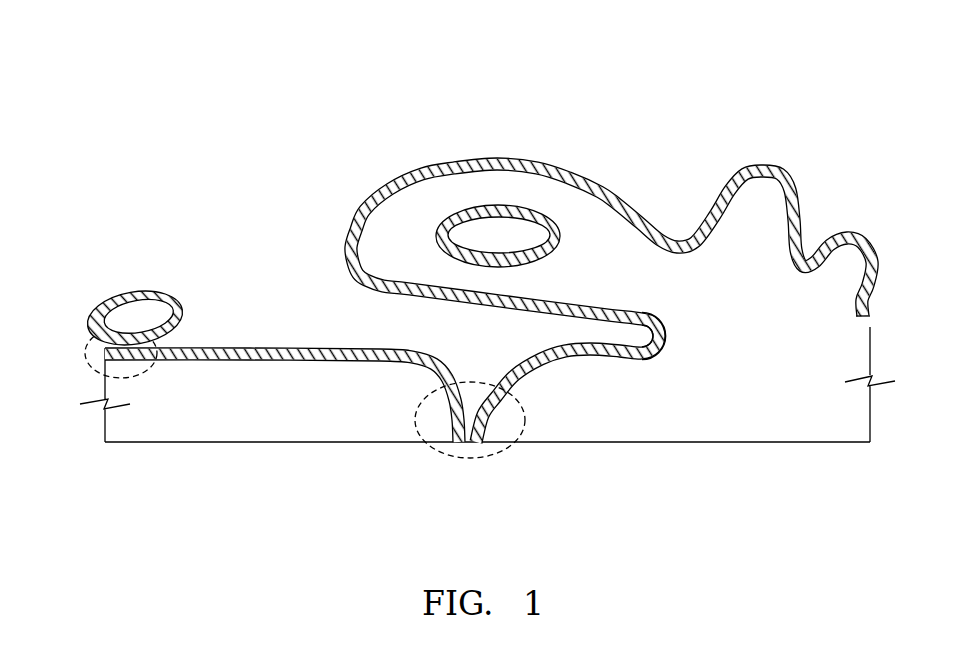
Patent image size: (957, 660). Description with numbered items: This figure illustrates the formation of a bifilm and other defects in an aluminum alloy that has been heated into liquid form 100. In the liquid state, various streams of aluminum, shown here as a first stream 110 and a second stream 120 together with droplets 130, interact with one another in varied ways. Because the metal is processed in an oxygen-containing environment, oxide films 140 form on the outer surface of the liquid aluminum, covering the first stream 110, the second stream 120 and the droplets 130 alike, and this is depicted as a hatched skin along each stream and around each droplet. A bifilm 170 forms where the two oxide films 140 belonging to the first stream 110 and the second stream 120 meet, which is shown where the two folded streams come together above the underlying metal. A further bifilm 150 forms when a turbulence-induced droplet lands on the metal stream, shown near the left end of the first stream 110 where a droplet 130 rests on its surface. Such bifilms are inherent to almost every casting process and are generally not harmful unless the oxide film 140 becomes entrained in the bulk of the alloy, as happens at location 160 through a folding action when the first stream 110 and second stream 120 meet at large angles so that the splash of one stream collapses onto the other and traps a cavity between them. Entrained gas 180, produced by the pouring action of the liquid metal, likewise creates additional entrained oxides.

The liquid form 100 is at (458, 290).
The first stream 110 is at (277, 415).
The second stream 120 is at (779, 364).
The droplets 130 is at (132, 320).
The oxide films 140 is at (175, 317).
The bifilm 150 is at (85, 349).
The location of entrained oxide film 160 is at (618, 340).
The bifilm 170 is at (444, 456).
The entrained gas 180 is at (503, 235).